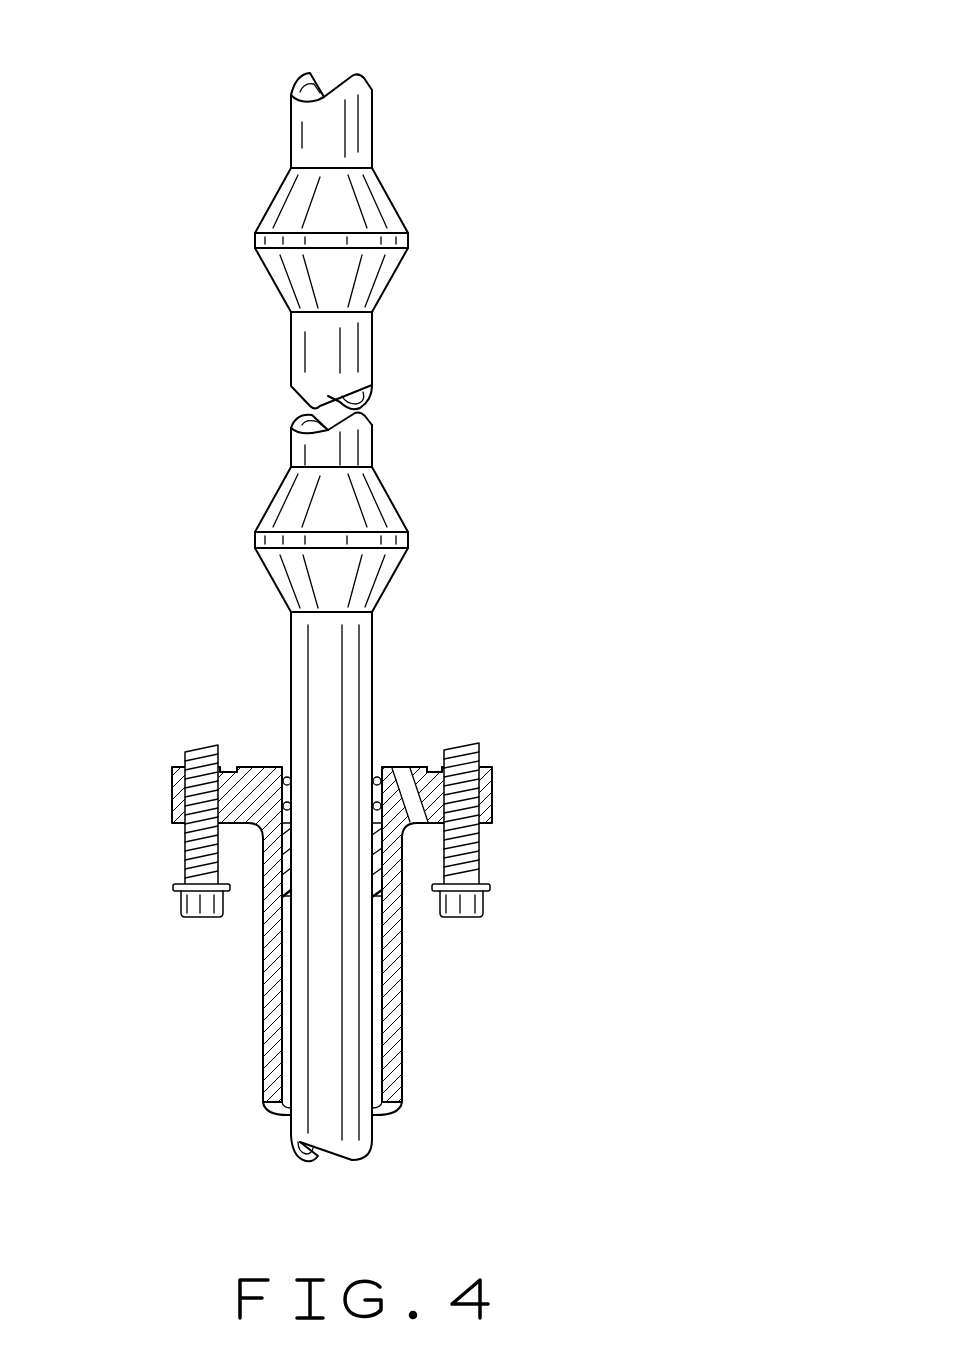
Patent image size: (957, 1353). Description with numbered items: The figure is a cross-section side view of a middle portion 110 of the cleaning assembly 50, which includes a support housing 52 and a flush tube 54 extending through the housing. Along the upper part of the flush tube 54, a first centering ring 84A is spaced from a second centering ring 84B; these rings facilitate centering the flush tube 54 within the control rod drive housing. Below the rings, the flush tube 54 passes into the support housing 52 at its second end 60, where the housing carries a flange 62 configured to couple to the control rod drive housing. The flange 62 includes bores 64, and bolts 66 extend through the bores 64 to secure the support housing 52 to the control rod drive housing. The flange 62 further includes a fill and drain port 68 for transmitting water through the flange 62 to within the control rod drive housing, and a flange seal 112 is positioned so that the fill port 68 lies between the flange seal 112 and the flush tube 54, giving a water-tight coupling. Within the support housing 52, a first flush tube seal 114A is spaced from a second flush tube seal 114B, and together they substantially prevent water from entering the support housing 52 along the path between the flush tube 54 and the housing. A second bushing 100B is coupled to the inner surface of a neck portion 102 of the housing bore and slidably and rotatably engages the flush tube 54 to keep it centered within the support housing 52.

The cleaning assembly 50 is at (237, 97).
The middle portion 110 is at (507, 117).
The first centering ring 84A is at (368, 203).
The second centering ring 84B is at (362, 520).
The flush tube 54 is at (348, 360).
The second end 60 is at (378, 762).
The flange 62 is at (487, 788).
The bores 64 is at (460, 810).
The bolts 66 is at (472, 917).
The fill and drain port 68 is at (420, 817).
The flange seal 112 is at (430, 763).
The first flush tube seal 114A is at (282, 765).
The second flush tube seal 114B is at (257, 767).
The second bushing 100B is at (280, 900).
The neck portion 102 is at (410, 1018).
The support housing 52 is at (390, 1072).